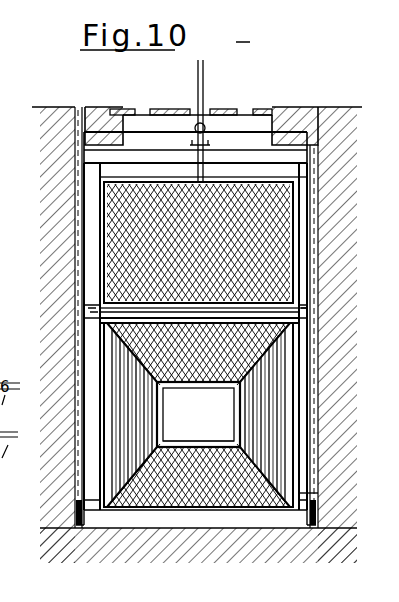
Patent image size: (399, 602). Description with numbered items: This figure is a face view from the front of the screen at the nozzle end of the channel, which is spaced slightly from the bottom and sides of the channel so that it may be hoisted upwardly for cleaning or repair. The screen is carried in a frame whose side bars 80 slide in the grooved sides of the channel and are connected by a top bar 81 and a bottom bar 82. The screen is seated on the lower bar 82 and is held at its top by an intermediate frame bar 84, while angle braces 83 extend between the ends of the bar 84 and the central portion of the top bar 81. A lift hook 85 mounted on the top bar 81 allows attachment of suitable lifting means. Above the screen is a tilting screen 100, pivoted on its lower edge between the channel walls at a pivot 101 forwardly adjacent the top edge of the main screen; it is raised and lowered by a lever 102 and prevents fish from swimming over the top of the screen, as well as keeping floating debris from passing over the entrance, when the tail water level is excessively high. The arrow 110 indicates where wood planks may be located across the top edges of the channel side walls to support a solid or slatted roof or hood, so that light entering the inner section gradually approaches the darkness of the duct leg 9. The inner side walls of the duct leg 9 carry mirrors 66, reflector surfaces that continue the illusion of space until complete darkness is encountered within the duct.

The duct leg 9 is at (188, 441).
The mirror 66 is at (232, 401).
The side bar 80 is at (90, 528).
The top bar 81 is at (253, 153).
The bottom bar 82 is at (296, 522).
The angle brace 83 is at (193, 176).
The intermediate frame bar 84 is at (98, 325).
The lift hook 85 is at (238, 112).
The tilting screen 100 is at (105, 243).
The pivot 101 is at (86, 312).
The lever 102 is at (198, 88).
The arrow 110 is at (251, 97).